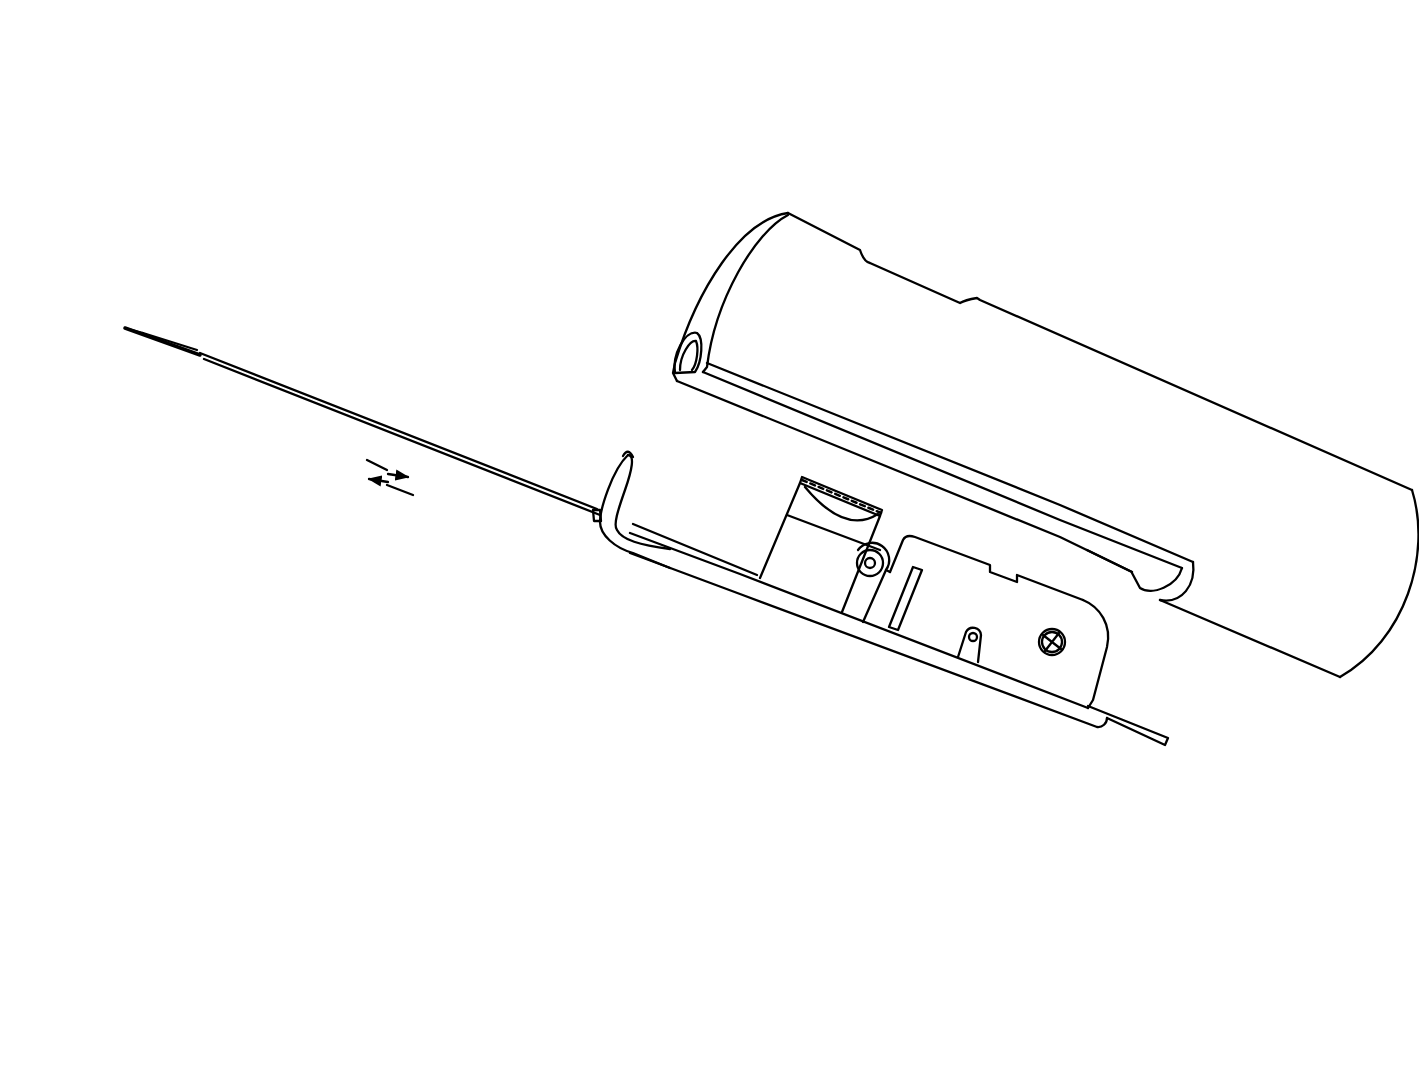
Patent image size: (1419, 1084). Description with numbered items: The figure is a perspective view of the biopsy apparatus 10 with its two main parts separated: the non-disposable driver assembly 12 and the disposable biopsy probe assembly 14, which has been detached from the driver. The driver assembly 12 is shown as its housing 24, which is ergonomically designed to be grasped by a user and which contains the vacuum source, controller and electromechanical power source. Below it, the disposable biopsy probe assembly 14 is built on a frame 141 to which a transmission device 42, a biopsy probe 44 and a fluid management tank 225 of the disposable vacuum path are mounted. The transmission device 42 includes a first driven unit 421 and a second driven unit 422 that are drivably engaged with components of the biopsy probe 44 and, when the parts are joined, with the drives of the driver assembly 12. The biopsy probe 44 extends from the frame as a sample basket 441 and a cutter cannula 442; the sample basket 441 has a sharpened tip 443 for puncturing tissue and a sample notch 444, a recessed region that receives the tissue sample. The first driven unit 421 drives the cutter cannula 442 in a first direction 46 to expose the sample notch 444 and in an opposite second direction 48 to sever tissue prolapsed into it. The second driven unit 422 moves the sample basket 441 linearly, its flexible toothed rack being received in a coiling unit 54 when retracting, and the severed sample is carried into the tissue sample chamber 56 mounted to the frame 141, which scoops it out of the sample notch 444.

The biopsy apparatus 10 is at (411, 246).
The driver assembly 12 is at (608, 260).
The housing 24 is at (1157, 377).
The disposable biopsy probe assembly 14 is at (1290, 739).
The frame 141 is at (693, 582).
The transmission device 42 is at (1106, 752).
The first driven unit 421 is at (1157, 730).
The second driven unit 422 is at (1052, 655).
The biopsy probe 44 is at (206, 288).
The sample basket 441 is at (173, 352).
The cutter cannula 442 is at (305, 393).
The sharpened tip 443 is at (126, 329).
The sample notch 444 is at (158, 339).
The first direction 46 is at (387, 466).
The second direction 48 is at (387, 487).
The coiling unit 54 is at (1119, 667).
The tissue sample chamber 56 is at (842, 487).
The fluid management tank 225 is at (973, 538).